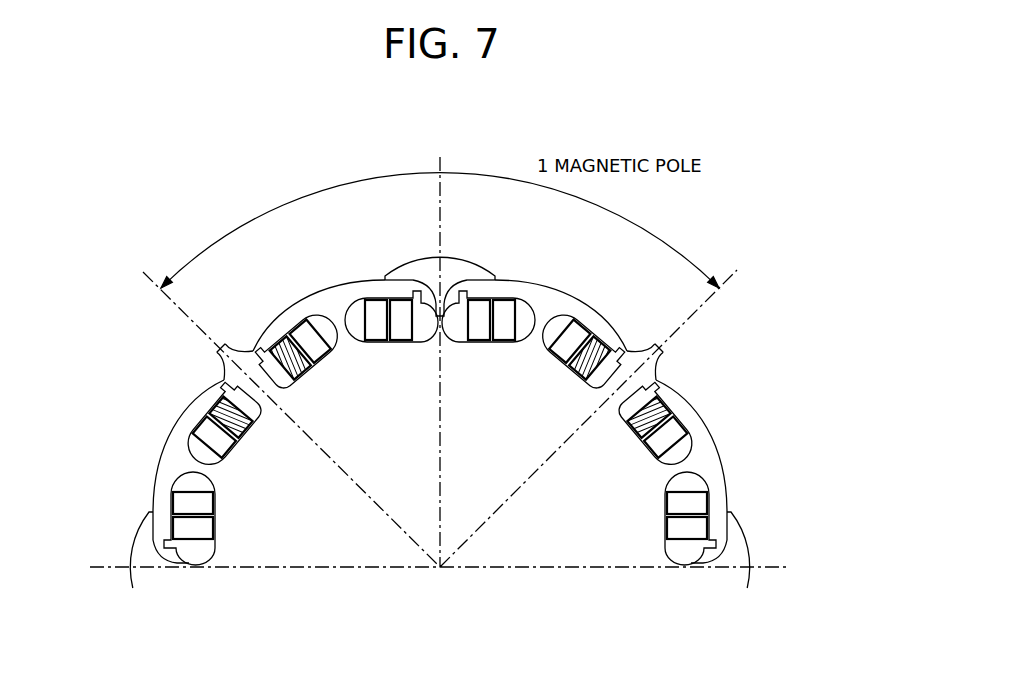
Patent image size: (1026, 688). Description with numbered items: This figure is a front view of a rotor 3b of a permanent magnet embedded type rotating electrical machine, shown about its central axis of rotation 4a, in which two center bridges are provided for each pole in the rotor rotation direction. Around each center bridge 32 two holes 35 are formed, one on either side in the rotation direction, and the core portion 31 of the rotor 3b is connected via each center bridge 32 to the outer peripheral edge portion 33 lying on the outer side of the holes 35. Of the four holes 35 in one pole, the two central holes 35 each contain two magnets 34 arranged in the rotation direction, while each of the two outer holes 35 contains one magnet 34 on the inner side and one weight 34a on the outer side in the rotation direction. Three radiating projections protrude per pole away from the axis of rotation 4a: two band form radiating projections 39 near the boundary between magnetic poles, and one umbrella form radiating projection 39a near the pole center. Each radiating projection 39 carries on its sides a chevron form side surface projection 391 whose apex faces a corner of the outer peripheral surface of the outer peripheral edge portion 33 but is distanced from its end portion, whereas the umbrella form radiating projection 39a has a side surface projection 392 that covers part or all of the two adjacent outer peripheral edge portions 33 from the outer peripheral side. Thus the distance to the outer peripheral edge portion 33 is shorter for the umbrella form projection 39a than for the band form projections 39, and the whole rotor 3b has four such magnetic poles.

The rotor 3b is at (782, 330).
The central axis of rotation 4a is at (440, 572).
The core portion 31 is at (421, 496).
The center bridge 32 is at (320, 297).
The outer peripheral edge portion 33 is at (340, 293).
The magnet 34 is at (313, 382).
The weight 34a is at (307, 390).
The hole 35 is at (310, 313).
The radiating projection 39 is at (218, 348).
The umbrella form radiating projection 39a is at (423, 262).
The chevron form side surface projection 391 is at (248, 350).
The side surface projection 392 is at (393, 277).